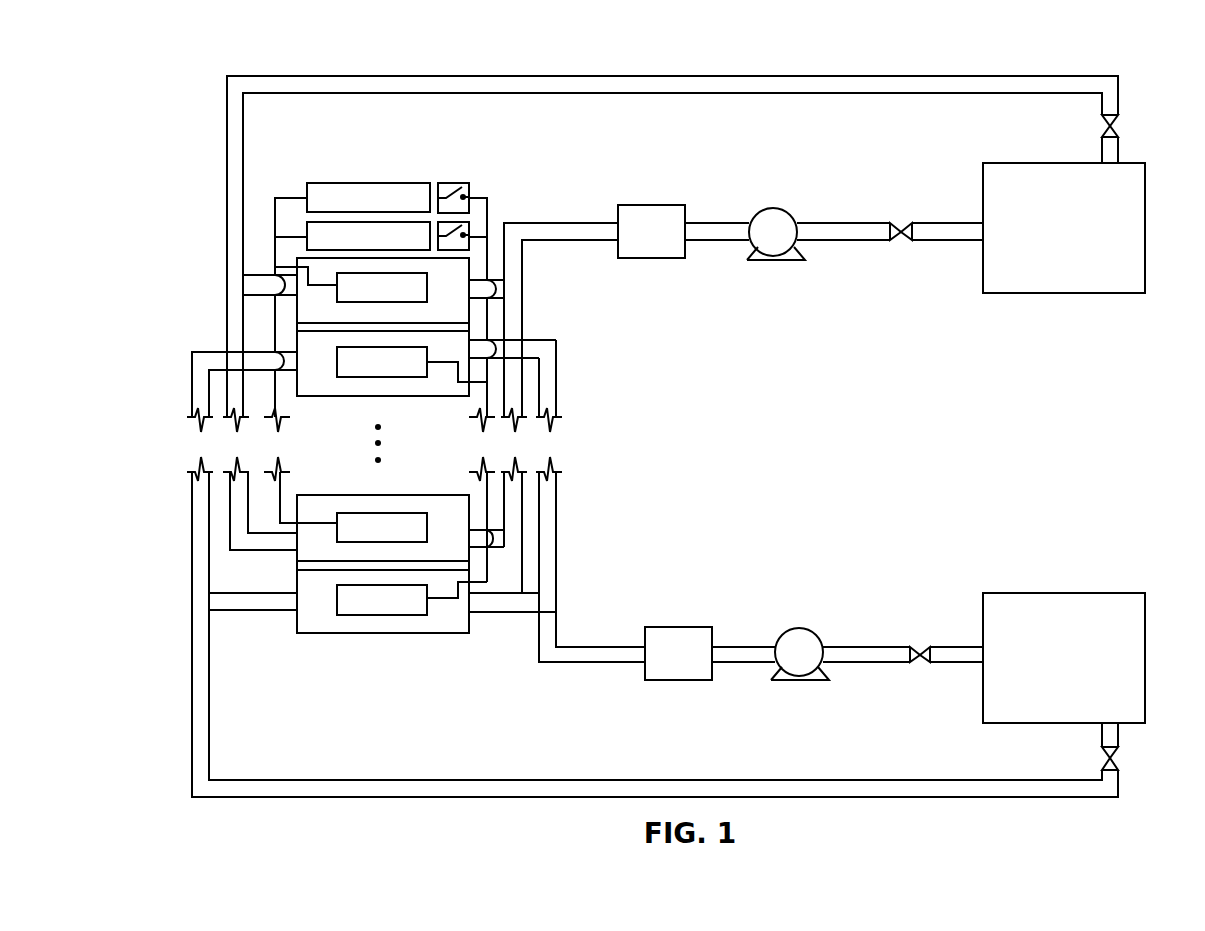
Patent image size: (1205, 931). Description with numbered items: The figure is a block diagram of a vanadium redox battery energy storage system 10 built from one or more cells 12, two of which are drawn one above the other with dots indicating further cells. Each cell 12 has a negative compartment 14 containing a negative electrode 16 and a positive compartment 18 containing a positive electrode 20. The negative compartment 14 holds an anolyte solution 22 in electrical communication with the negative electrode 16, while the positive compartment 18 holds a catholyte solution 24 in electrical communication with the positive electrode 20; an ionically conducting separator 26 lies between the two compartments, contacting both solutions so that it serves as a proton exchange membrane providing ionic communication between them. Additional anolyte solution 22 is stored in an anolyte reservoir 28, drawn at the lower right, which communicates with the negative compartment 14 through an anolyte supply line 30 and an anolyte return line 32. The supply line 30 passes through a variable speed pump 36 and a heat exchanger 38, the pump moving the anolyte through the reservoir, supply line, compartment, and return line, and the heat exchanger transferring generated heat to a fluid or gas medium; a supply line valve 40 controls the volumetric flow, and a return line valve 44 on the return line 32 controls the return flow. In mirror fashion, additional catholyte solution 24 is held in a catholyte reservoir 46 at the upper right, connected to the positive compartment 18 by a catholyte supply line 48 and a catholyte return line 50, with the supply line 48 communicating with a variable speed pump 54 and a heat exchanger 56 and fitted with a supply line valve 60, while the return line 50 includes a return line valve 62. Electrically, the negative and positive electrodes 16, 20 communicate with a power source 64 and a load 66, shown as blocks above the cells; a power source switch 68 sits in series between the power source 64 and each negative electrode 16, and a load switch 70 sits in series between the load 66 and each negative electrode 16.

The system 10 is at (184, 102).
The cell 12 is at (395, 403).
The negative compartment 14 is at (437, 359).
The negative electrode 16 is at (370, 376).
The positive compartment 18 is at (440, 301).
The positive electrode 20 is at (370, 299).
The anolyte solution 22 is at (304, 372).
The catholyte solution 24 is at (304, 319).
The ionically conducting separator 26 is at (470, 328).
The anolyte reservoir 28 is at (1050, 674).
The anolyte supply line 30 is at (573, 658).
The anolyte return line 32 is at (201, 637).
The pump 36 is at (787, 665).
The heat exchanger 38 is at (666, 667).
The supply line valve 40 is at (921, 663).
The return line valve 44 is at (1120, 752).
The catholyte reservoir 46 is at (1054, 244).
The catholyte supply line 48 is at (947, 222).
The catholyte return line 50 is at (232, 258).
The pump 54 is at (761, 244).
The heat exchanger 56 is at (639, 244).
The supply line valve 60 is at (902, 242).
The return line valve 62 is at (1120, 126).
The power source 64 is at (355, 247).
The load 66 is at (355, 208).
The power source switch 68 is at (466, 226).
The load switch 70 is at (466, 188).